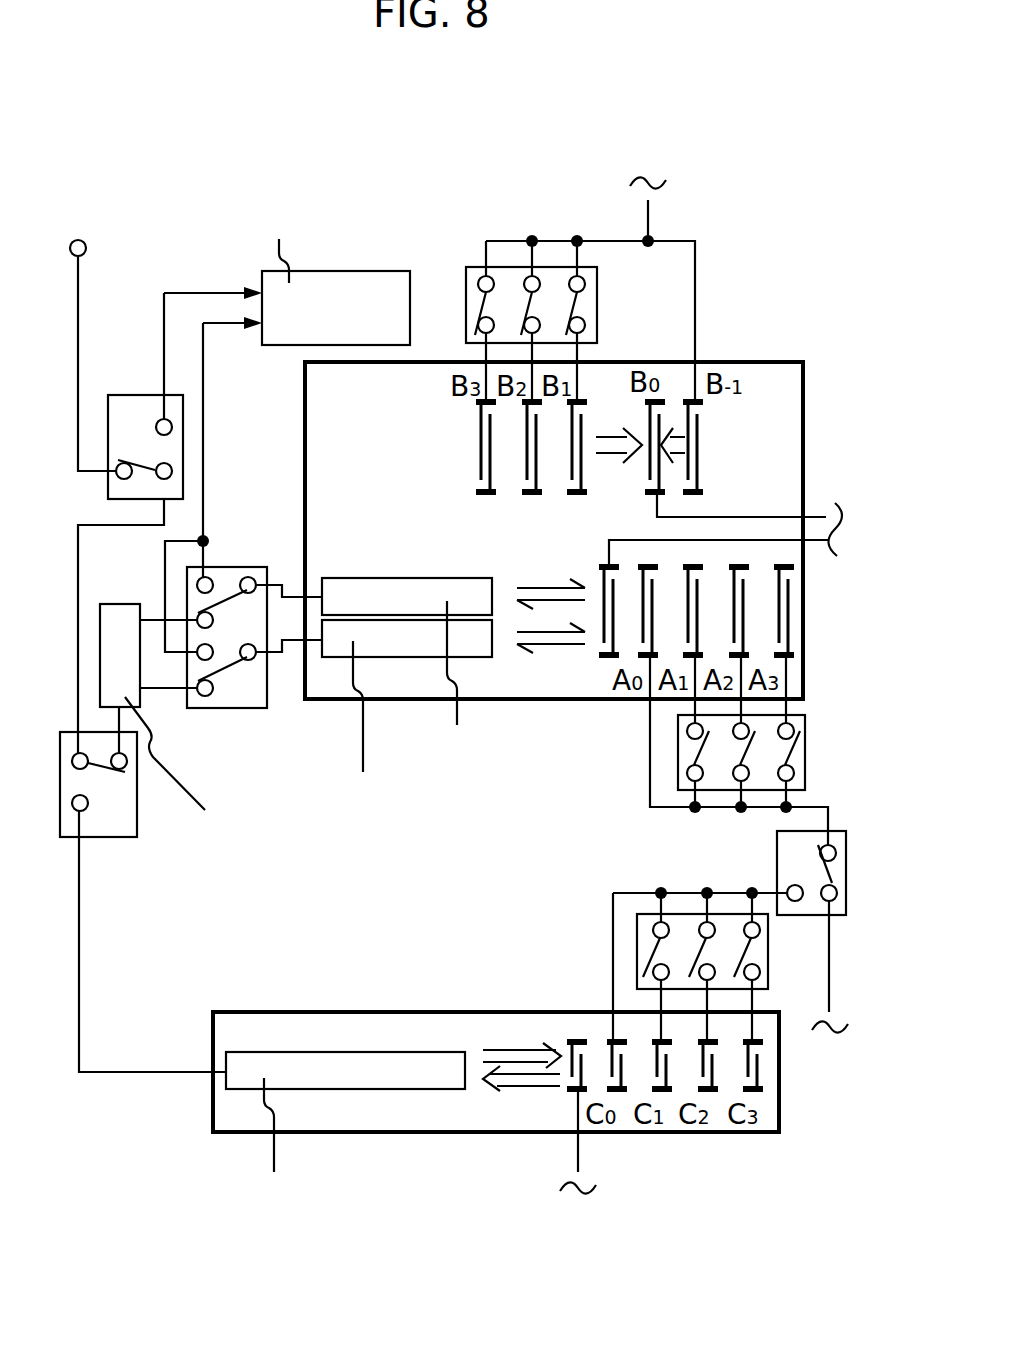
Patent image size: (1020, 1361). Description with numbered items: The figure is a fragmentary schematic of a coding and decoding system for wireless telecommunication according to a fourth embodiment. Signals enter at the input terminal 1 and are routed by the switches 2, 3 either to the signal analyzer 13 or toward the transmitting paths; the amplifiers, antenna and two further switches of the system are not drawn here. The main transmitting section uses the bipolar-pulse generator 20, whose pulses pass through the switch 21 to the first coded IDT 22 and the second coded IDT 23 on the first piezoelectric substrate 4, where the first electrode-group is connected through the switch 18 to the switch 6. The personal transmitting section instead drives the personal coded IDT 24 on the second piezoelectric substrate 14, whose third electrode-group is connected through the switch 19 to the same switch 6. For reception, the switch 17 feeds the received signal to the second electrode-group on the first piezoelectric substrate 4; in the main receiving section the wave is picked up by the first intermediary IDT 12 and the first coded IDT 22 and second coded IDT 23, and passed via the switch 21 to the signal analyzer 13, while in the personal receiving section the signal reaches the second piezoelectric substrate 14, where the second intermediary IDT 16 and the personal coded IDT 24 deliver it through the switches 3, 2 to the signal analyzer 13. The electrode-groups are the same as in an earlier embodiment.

The input terminal 1 is at (115, 321).
The switch 2 is at (123, 410).
The switch 3 is at (118, 837).
The first piezoelectric substrate 4 is at (780, 372).
The switch 6 is at (777, 853).
The first intermediary IDT 12 is at (590, 632).
The signal analyzer 13 is at (359, 271).
The second piezoelectric substrate 14 is at (555, 1012).
The second intermediary IDT 16 is at (560, 1086).
The switch 17 is at (597, 305).
The switch 18 is at (805, 758).
The switch 19 is at (768, 952).
The bipolar-pulse generator 20 is at (234, 738).
The switch 21 is at (250, 708).
The first coded IDT 22 is at (465, 673).
The second coded IDT 23 is at (452, 713).
The personal coded IDT 24 is at (345, 1141).